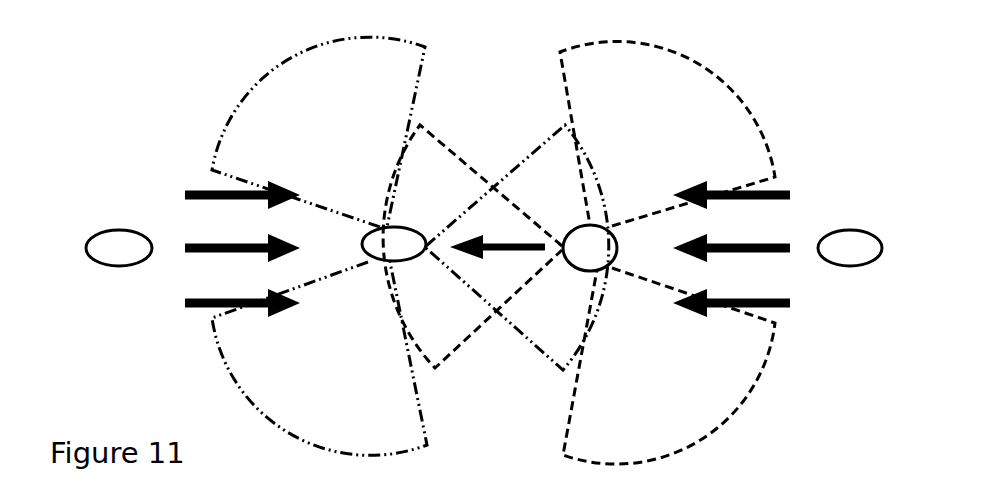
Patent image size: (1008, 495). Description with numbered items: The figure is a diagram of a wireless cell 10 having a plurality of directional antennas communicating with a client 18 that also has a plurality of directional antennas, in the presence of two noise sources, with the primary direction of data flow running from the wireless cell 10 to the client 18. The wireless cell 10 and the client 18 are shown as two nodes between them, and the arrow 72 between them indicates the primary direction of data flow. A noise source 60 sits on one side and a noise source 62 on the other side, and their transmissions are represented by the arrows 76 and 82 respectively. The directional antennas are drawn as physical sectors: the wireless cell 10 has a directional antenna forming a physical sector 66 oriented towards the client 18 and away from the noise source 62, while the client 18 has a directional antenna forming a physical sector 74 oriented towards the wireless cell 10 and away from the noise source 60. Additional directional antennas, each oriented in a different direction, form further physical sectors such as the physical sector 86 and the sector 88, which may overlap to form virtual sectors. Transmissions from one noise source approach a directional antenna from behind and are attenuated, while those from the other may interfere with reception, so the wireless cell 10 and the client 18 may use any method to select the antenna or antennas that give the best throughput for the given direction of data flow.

The wireless cell 10 is at (576, 261).
The client 18 is at (380, 257).
The noise source 60 is at (105, 261).
The noise source 62 is at (836, 261).
The physical sector 66 is at (441, 360).
The arrow 72 is at (523, 243).
The physical sector 74 is at (538, 146).
The arrow 76 is at (157, 172).
The arrow 82 is at (803, 172).
The physical sector 86 is at (246, 94).
The sensor coverage region 88 is at (732, 88).